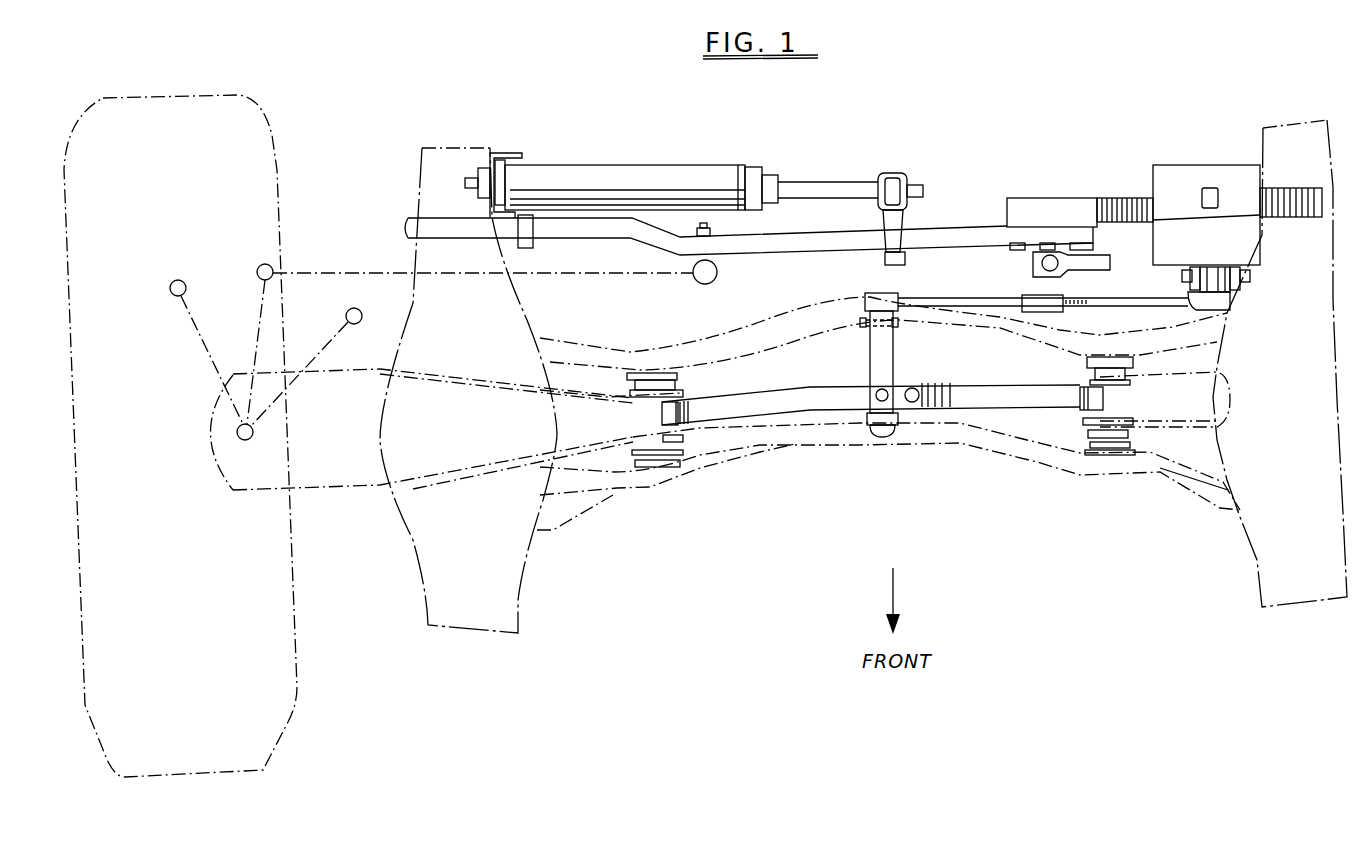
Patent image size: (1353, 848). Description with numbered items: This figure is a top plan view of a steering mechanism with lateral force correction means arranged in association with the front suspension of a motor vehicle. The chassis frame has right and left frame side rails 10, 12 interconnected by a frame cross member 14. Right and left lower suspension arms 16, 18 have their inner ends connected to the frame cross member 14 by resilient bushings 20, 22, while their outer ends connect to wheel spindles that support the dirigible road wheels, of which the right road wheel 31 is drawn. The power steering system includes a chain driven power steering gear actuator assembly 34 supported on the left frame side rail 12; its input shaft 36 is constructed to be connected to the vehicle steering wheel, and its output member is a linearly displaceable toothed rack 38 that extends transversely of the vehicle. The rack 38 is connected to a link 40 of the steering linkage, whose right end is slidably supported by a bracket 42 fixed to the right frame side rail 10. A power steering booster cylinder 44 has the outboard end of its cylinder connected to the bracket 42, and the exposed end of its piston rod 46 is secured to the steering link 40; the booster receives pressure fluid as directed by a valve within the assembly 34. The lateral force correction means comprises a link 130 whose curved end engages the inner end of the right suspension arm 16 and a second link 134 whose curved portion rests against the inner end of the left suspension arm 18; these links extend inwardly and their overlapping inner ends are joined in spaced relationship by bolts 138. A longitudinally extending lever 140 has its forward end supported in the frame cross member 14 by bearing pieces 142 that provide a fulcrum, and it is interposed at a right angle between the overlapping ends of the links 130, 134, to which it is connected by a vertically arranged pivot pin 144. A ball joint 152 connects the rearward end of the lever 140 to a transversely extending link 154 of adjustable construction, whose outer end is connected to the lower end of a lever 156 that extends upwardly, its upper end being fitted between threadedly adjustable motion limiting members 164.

The right frame side rail 10 is at (517, 613).
The left frame side rail 12 is at (1262, 548).
The frame cross member 14 is at (843, 448).
The right lower suspension arm 16 is at (350, 474).
The left lower suspension arm 18 is at (1225, 397).
The resilient bushing 20 is at (663, 477).
The resilient bushing 22 is at (1115, 427).
The right dirigible road wheel 31 is at (253, 152).
The power steering gear actuator assembly 34 is at (1172, 165).
The input shaft 36 is at (1210, 188).
The toothed rack 38 is at (1108, 207).
The steering link 40 is at (958, 233).
The bracket 42 is at (496, 156).
The power steering booster cylinder 44 is at (700, 163).
The piston rod 46 is at (830, 190).
The link 130 is at (752, 400).
The second link 134 is at (1012, 398).
The bolts 138 is at (948, 383).
The longitudinally extending lever 140 is at (888, 362).
The bearing pieces 142 is at (898, 437).
The pivot pin 144 is at (877, 385).
The ball joint 152 is at (866, 300).
The transversely extending link 154 is at (980, 291).
The lever 156 is at (1227, 297).
The threadedly adjustable motion limiting members 164 is at (1182, 275).